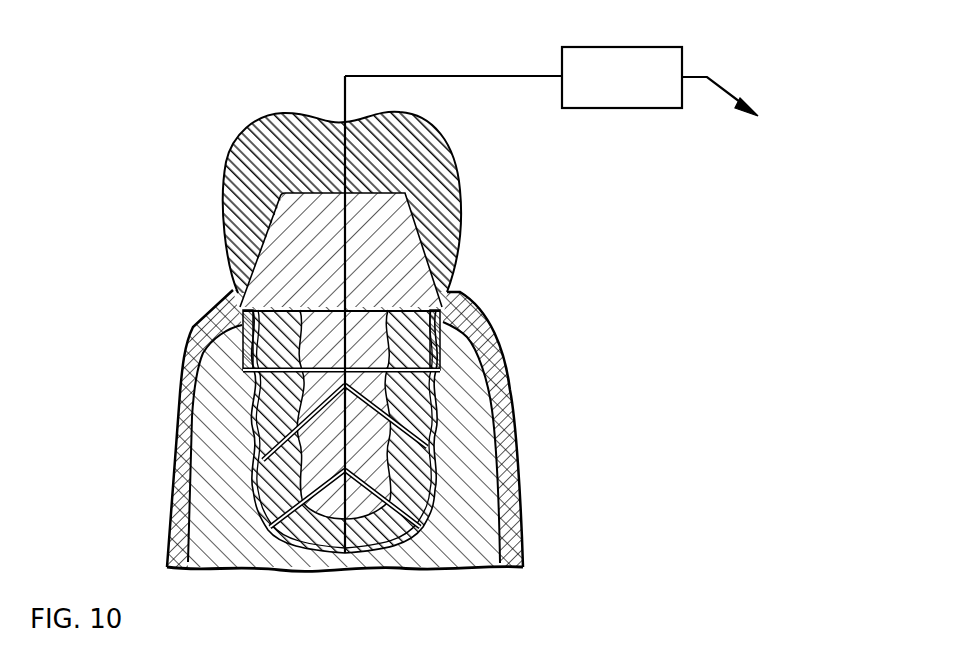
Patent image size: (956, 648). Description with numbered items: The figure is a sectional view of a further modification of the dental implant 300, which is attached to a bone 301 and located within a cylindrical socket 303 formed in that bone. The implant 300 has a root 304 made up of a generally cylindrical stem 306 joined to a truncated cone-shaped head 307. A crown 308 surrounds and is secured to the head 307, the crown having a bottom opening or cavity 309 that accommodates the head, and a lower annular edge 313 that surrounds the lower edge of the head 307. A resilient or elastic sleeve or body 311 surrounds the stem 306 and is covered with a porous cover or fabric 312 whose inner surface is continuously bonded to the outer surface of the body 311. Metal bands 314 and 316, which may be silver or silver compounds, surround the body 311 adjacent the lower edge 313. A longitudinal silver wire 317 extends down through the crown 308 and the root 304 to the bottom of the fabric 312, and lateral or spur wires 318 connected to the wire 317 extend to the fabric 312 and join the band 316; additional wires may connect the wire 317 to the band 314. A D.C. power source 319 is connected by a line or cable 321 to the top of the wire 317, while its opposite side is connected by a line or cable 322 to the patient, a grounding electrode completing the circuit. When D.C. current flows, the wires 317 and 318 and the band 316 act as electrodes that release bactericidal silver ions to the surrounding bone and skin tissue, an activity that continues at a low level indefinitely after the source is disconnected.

The dental implant 300 is at (230, 108).
The bone 301 is at (485, 493).
The cylindrical socket 303 is at (477, 570).
The root 304 is at (396, 250).
The stem 306 is at (473, 303).
The head 307 is at (415, 195).
The crown 308 is at (430, 135).
The bottom opening or cavity 309 is at (228, 192).
The resilient sleeve or body 311 is at (310, 548).
The porous cover or fabric 312 is at (255, 540).
The lower annular edge 313 is at (233, 302).
The metal band 314 is at (242, 328).
The metal band 316 is at (443, 355).
The longitudinal wire 317 is at (337, 150).
The lateral or spur wires 318 is at (262, 414).
The D.C. power source 319 is at (650, 47).
The line or cable 321 is at (452, 76).
The line or cable 322 is at (720, 88).